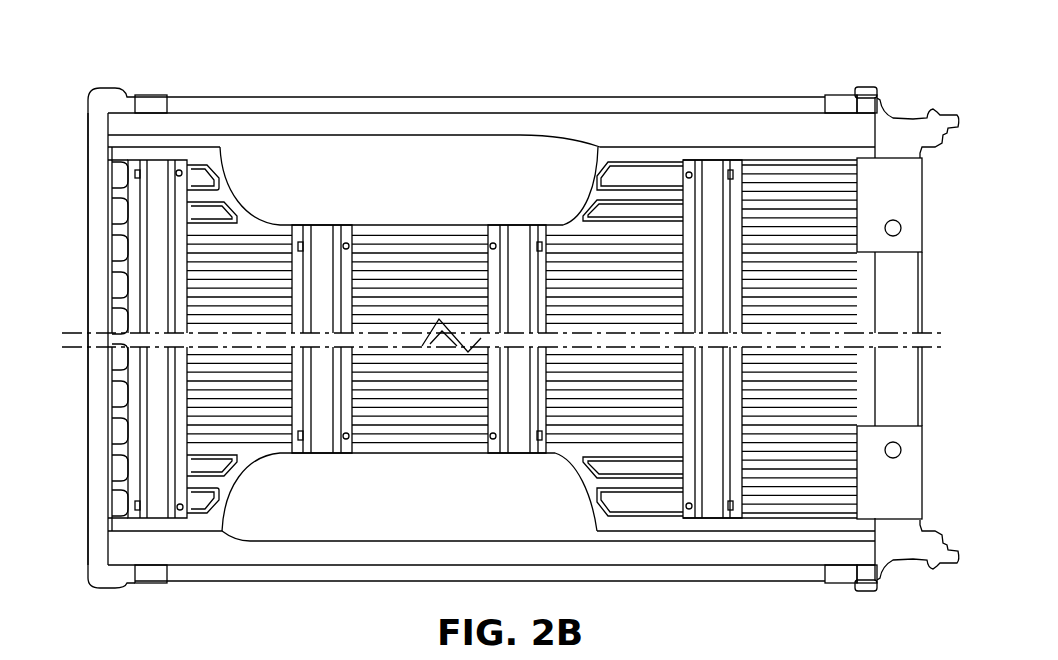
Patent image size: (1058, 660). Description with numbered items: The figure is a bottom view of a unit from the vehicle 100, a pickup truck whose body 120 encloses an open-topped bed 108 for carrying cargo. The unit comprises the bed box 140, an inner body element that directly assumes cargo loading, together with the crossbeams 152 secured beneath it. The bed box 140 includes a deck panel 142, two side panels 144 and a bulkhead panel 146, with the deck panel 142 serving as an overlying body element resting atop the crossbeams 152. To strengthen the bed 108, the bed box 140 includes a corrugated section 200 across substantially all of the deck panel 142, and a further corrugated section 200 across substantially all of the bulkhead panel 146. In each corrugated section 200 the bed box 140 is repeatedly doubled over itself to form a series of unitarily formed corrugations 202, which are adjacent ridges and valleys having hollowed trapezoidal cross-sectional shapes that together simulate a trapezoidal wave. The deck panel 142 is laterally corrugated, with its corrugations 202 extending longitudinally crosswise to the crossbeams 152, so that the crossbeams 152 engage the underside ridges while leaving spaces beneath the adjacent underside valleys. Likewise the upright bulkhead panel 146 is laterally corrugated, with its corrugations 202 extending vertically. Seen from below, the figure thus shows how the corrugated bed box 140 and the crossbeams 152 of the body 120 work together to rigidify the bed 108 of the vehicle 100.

The vehicle 100 is at (112, 91).
The bed 108 is at (198, 95).
The body 120 is at (272, 96).
The bed box 140 is at (354, 96).
The deck panel 142 is at (622, 147).
The side panels 144 is at (418, 97).
The bulkhead panel 146 is at (88, 393).
The crossbeams 152 is at (158, 518).
The corrugated section 200 is at (643, 162).
The corrugations 202 is at (665, 173).